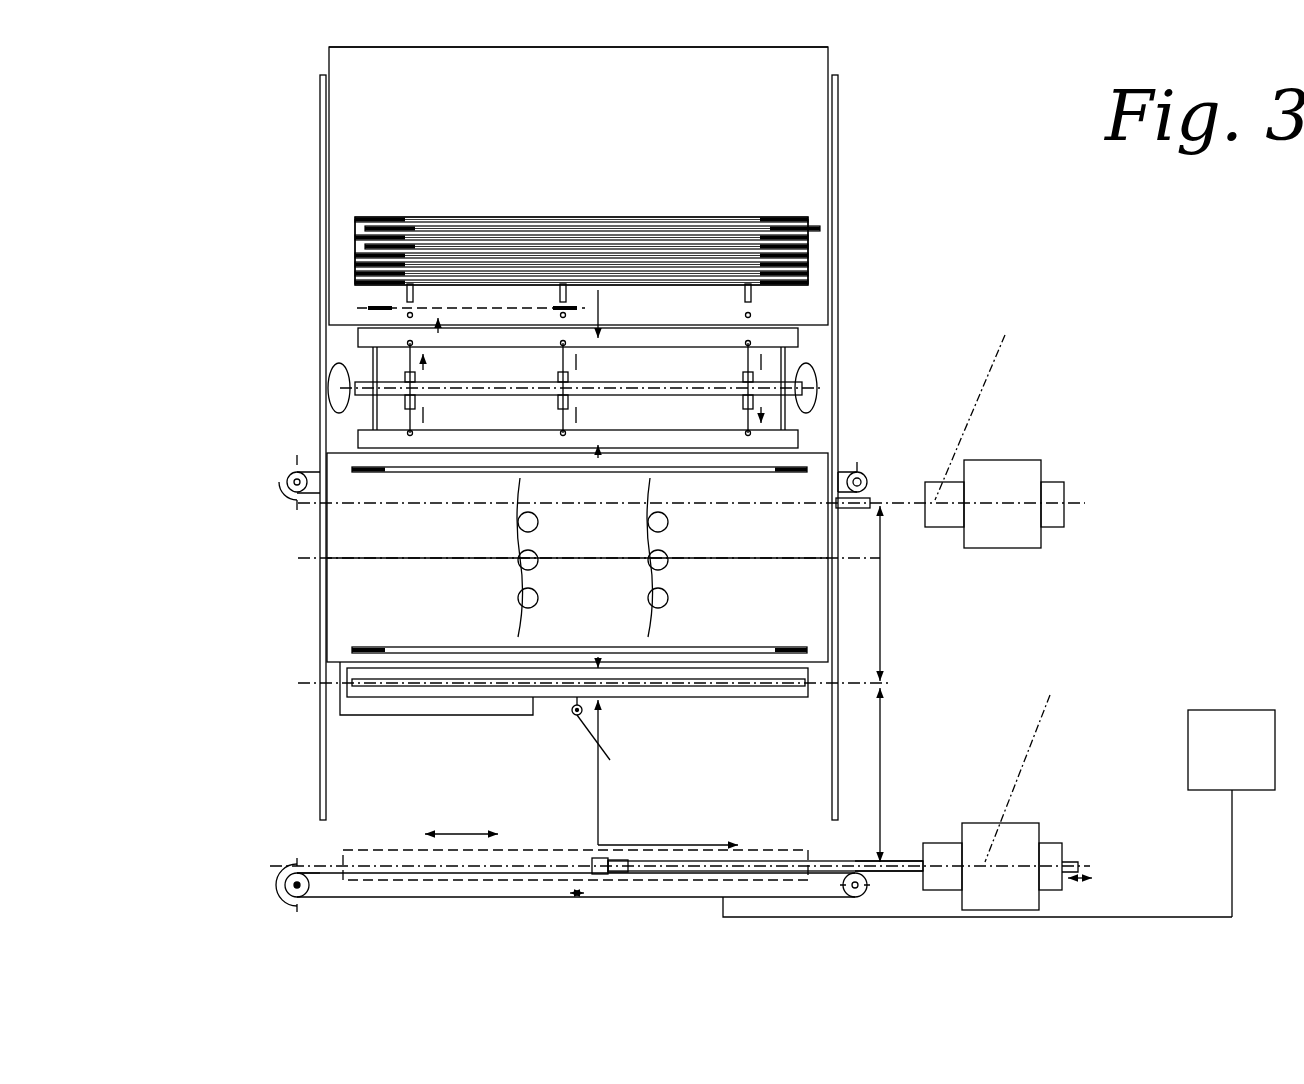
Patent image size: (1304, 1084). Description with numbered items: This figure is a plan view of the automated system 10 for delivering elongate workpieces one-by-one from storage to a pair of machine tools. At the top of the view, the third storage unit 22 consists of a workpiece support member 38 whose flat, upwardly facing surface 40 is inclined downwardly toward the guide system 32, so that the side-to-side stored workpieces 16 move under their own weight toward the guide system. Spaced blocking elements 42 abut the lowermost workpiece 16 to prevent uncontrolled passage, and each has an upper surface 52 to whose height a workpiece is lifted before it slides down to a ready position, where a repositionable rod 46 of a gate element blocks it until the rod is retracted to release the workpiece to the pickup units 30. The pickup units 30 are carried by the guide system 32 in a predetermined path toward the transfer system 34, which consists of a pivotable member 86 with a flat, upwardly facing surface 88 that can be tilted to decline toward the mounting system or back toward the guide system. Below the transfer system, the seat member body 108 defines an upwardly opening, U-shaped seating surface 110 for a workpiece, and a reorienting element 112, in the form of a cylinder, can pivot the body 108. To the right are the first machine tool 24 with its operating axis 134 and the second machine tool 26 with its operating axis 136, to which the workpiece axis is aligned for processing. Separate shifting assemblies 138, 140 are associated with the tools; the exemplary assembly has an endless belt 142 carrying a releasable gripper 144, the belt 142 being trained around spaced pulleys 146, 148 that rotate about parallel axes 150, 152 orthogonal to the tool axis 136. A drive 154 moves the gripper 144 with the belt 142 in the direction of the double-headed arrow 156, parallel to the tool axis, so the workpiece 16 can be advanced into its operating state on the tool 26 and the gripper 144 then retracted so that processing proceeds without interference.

The automated system for delivering elongate workpieces 10 is at (1170, 492).
The elongate workpiece 16 is at (812, 218).
The third storage unit 22 is at (790, 122).
The first machine tool 24 is at (1044, 480).
The second machine tool 26 is at (1042, 840).
The pickup unit 30 is at (768, 336).
The guide system 32 is at (808, 352).
The transfer system 34 is at (882, 612).
The workpiece support member 38 is at (642, 99).
The upwardly facing surface 40 is at (738, 72).
The blocking element 42 is at (409, 284).
The rod 46 is at (405, 315).
The upper surface 52 is at (360, 252).
The pivotable member 86 is at (342, 538).
The upwardly facing surface 88 is at (342, 627).
The body 108 is at (645, 700).
The U-shaped seating surface 110 is at (562, 698).
The reorienting element 112 is at (582, 718).
The operating axis 134 is at (981, 403).
The operating axis 136 is at (1029, 766).
The shifting assembly 138 is at (880, 470).
The shifting assembly 140 is at (700, 843).
The endless belt 142 is at (625, 897).
The releasable gripper 144 is at (594, 860).
The pulley 146 is at (295, 876).
The pulley 148 is at (858, 870).
The axis 150 is at (291, 880).
The axis 152 is at (872, 868).
The drive 154 is at (1240, 786).
The double-headed arrow 156 is at (455, 830).